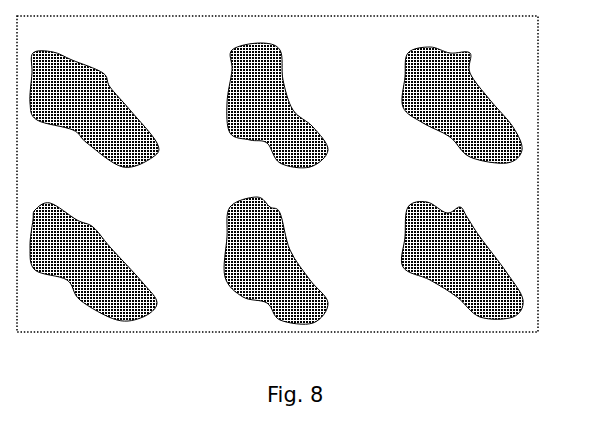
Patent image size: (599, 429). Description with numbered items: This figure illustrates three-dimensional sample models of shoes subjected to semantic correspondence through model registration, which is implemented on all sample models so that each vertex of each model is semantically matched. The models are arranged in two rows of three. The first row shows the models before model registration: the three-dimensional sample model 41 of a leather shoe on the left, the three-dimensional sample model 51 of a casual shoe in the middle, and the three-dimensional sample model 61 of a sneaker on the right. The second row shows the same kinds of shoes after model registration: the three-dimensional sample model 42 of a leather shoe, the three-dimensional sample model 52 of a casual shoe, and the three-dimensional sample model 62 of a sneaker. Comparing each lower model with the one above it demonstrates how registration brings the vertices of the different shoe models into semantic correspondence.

The 3D sample model of a leather shoe 41 is at (78, 63).
The 3D sample model of a casual shoe 51 is at (280, 50).
The 3D sample model of a sneaker 61 is at (458, 53).
The 3D sample model of a leather shoe 42 is at (87, 225).
The 3D sample model of a casual shoe 52 is at (278, 210).
The 3D sample model of a sneaker 62 is at (462, 210).